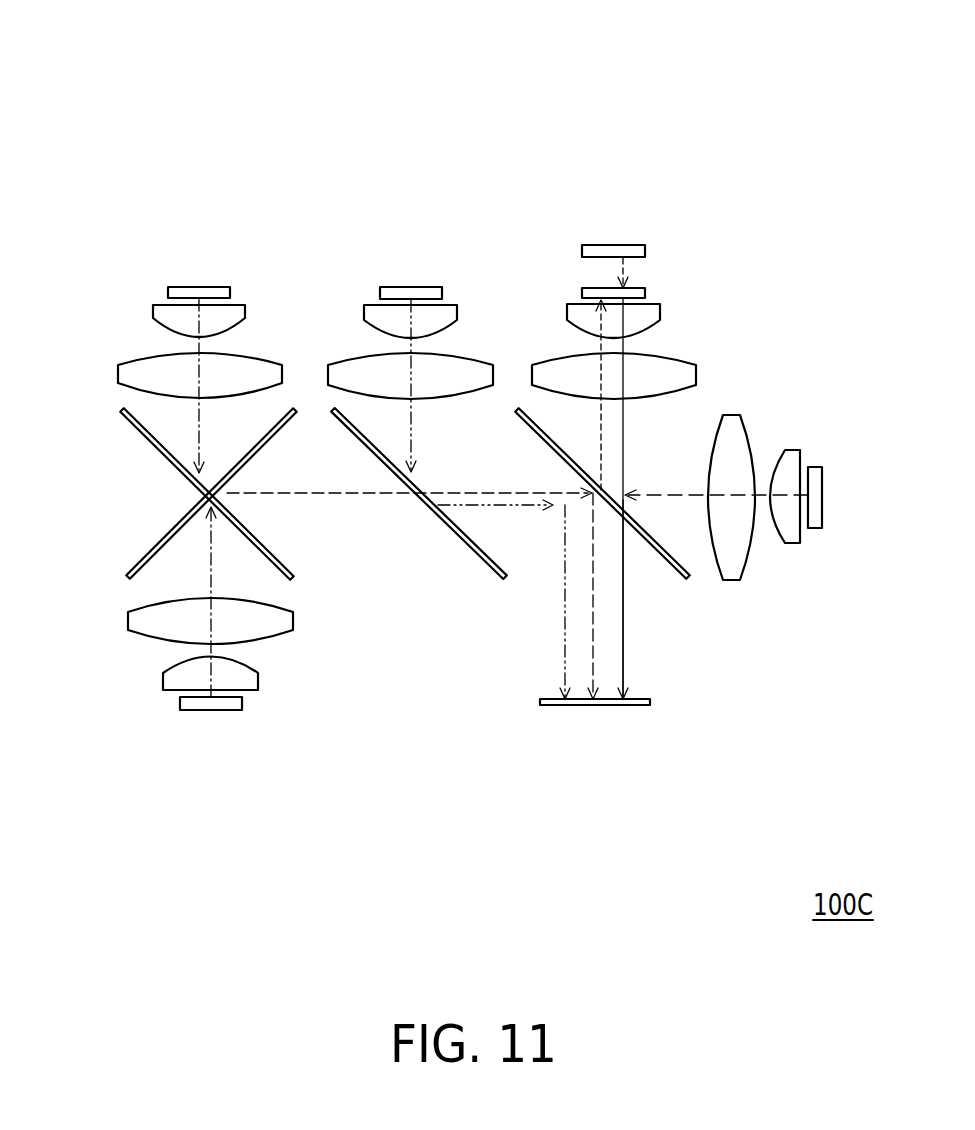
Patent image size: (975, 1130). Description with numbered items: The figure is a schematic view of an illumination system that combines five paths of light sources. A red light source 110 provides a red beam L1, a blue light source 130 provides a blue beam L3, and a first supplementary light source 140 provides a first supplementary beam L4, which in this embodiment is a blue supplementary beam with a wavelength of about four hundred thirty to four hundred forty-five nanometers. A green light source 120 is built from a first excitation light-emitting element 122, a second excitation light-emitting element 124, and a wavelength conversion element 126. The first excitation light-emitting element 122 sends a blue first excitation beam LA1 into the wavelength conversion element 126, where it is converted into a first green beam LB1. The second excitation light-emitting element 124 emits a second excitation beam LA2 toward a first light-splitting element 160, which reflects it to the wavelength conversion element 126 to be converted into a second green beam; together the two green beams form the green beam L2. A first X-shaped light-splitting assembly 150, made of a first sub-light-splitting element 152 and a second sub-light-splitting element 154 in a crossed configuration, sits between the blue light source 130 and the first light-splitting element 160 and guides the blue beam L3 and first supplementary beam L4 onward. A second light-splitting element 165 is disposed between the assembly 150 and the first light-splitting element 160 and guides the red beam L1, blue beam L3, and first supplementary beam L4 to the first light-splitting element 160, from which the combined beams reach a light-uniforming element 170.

The red light source 110 is at (422, 287).
The green light source 120 is at (135, 12).
The first excitation light-emitting element 122 is at (601, 245).
The second excitation light-emitting element 124 is at (823, 478).
The wavelength conversion element 126 is at (645, 292).
The blue light source 130 is at (210, 287).
The first supplementary light source 140 is at (222, 712).
The first X-shaped light-splitting assembly 150 is at (435, 12).
The first sub-light-splitting element 152 is at (122, 411).
The second sub-light-splitting element 154 is at (128, 578).
The first light-splitting element 160 is at (673, 574).
The second light-splitting element 165 is at (463, 545).
The light-uniforming element 170 is at (643, 706).
The red beam L1 is at (411, 345).
The green beam L2 is at (282, 12).
The blue beam L3 is at (199, 345).
The first supplementary beam L4 is at (211, 650).
The first excitation beam LA1 is at (620, 262).
The second excitation beam LA2 is at (757, 497).
The first green beam LB1 is at (623, 417).